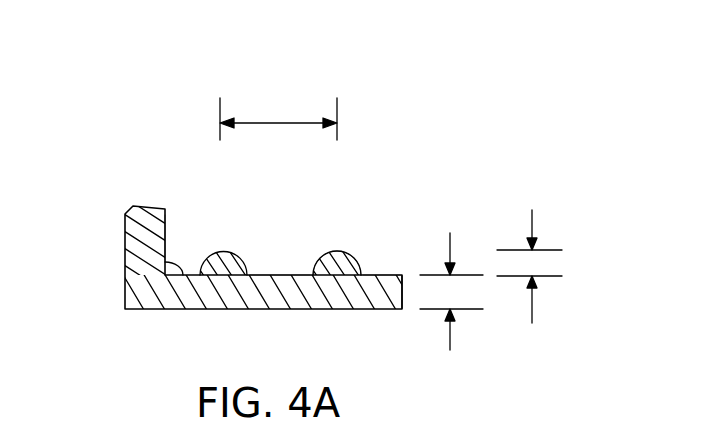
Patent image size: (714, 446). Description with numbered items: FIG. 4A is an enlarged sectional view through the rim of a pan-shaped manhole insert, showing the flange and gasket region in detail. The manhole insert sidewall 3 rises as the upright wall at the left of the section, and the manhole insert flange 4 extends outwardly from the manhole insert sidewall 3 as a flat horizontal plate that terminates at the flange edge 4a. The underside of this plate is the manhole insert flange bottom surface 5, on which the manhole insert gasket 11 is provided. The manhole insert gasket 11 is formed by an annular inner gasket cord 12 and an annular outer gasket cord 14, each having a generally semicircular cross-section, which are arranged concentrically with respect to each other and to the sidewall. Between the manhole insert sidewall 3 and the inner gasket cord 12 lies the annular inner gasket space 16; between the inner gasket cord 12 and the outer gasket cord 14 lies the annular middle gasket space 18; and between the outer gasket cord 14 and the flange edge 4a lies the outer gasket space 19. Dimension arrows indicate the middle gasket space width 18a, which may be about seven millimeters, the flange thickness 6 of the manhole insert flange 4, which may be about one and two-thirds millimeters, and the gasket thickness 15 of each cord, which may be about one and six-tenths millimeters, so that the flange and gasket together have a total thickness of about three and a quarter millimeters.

The manhole insert sidewall 3 is at (123, 226).
The manhole insert flange 4 is at (288, 292).
The flange edge 4a is at (402, 300).
The manhole insert flange bottom surface 5 is at (178, 262).
The flange thickness 6 is at (450, 233).
The manhole insert gasket 11 is at (358, 252).
The inner gasket cord 12 is at (213, 252).
The outer gasket cord 14 is at (338, 249).
The gasket thickness 15 is at (532, 210).
The inner gasket space 16 is at (185, 246).
The middle gasket space 18 is at (276, 255).
The middle gasket space width 18a is at (267, 120).
The outer gasket space 19 is at (386, 262).